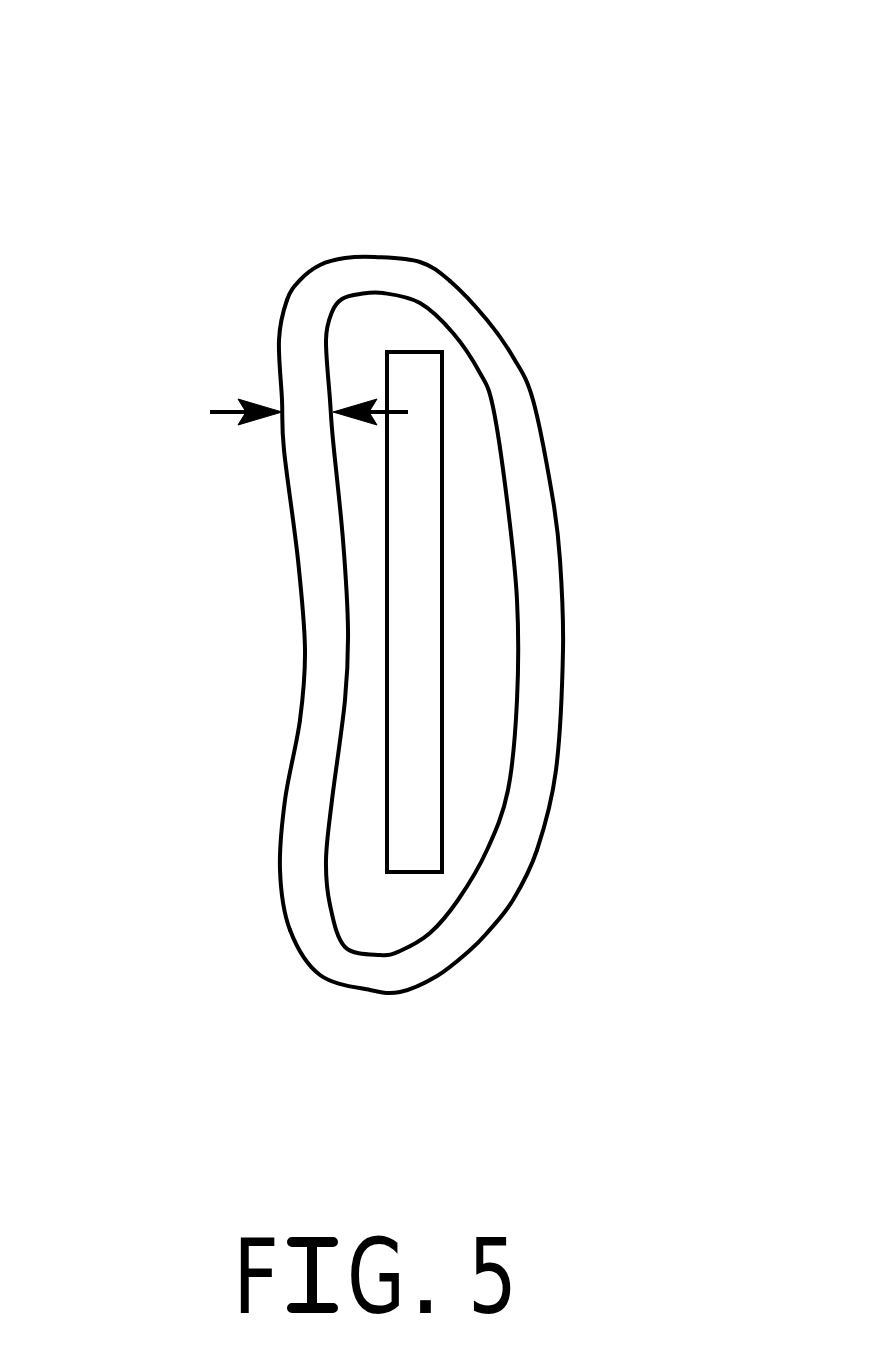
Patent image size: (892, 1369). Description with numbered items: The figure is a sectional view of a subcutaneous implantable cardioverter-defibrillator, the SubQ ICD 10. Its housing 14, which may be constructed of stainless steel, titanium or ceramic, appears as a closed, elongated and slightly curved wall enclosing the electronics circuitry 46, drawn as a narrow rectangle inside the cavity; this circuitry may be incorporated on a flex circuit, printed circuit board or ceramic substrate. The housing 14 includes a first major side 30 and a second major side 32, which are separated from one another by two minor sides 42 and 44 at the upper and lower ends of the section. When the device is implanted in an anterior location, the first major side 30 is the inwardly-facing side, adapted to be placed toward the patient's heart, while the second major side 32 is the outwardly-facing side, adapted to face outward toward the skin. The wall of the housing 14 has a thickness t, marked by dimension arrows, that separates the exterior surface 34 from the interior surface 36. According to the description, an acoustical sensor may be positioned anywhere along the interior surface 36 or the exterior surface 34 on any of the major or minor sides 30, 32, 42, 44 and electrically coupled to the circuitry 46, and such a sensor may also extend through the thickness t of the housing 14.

The SubQ ICD 10 is at (427, 59).
The housing 14 is at (272, 300).
The first major side 30 is at (303, 625).
The second major side 32 is at (562, 538).
The exterior surface 34 is at (282, 832).
The interior surface 36 is at (330, 857).
The minor side 42 is at (383, 257).
The minor side 44 is at (376, 995).
The electronics circuitry 46 is at (410, 457).